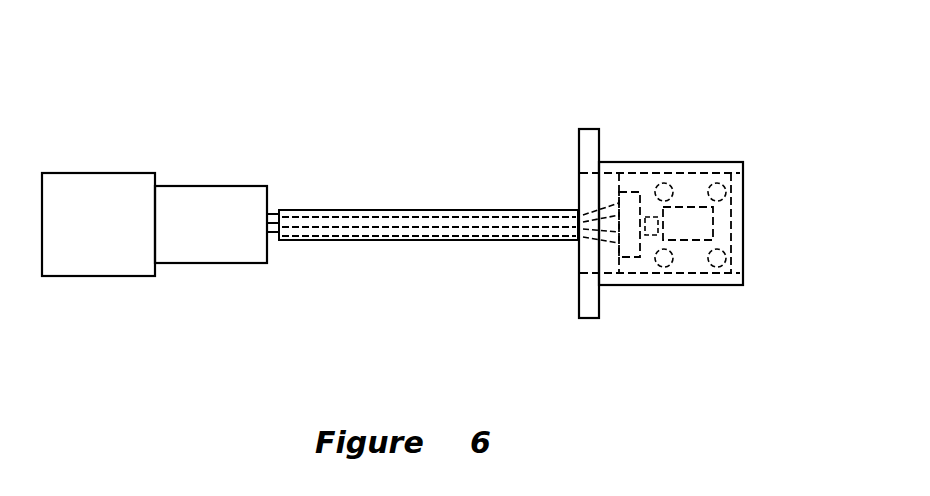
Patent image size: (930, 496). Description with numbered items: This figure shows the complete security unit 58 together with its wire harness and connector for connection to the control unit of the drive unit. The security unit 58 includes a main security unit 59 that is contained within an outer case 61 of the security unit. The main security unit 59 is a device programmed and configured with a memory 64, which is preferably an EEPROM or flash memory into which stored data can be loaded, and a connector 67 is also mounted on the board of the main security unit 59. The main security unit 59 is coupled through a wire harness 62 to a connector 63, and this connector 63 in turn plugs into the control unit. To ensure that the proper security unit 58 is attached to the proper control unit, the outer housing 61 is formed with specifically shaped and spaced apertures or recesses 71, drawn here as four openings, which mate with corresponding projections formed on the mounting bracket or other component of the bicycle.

The security unit 58 is at (630, 76).
The main security unit 59 is at (702, 172).
The outer case 61 is at (739, 162).
The wire harness 62 is at (442, 210).
The connector 63 is at (118, 173).
The memory 64 is at (713, 238).
The connector 67 is at (627, 257).
The recesses 71 is at (657, 185).